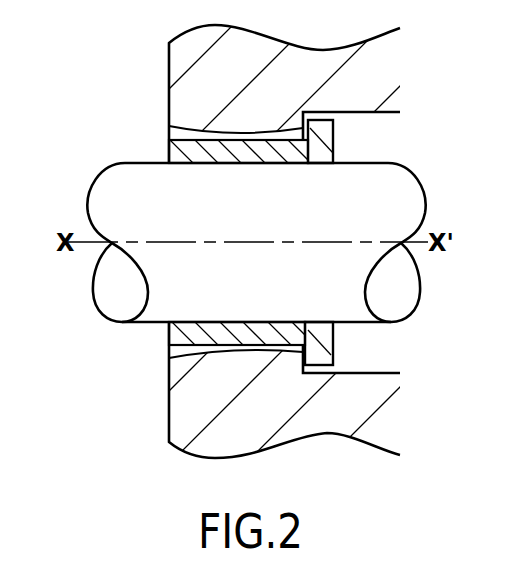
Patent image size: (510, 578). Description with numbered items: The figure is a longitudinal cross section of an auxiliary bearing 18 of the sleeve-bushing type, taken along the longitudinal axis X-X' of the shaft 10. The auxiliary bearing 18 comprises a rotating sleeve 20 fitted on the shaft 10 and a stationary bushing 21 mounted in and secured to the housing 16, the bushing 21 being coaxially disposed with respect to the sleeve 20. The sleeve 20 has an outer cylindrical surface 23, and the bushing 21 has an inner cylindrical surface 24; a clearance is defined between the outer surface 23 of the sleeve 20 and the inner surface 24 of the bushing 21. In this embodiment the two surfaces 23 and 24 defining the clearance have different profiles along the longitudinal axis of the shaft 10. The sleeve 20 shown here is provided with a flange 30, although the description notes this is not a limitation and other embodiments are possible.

The shaft 10 is at (357, 308).
The housing 16 is at (372, 433).
The auxiliary bearing 18 is at (126, 350).
The sleeve 20 is at (282, 136).
The bushing 21 is at (270, 350).
The outer cylindrical surface 23 is at (176, 129).
The inner cylindrical surface 24 is at (188, 352).
The flange 30 is at (322, 124).